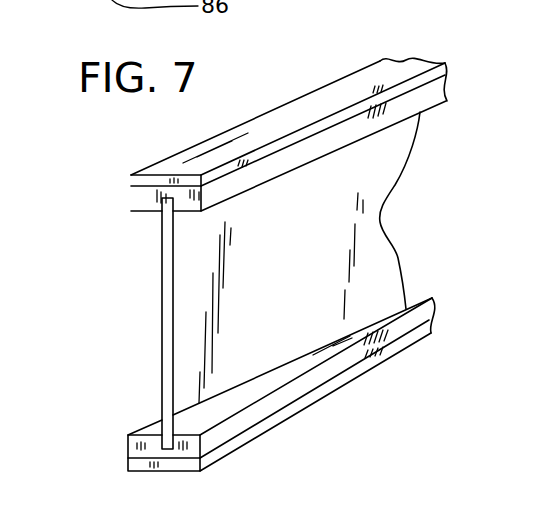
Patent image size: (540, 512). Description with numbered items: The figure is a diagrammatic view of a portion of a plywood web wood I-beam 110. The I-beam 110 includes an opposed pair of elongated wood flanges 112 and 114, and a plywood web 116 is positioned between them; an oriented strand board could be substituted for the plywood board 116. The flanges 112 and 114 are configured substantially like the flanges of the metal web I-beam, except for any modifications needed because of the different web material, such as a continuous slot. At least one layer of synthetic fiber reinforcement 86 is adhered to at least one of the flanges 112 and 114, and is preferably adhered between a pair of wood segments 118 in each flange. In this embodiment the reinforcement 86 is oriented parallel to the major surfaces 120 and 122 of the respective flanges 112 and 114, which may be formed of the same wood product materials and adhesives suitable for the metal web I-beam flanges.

The synthetic fiber reinforcement 86 is at (295, 146).
The plywood web wood I-beam 110 is at (393, 217).
The elongated wood flange 112 is at (422, 341).
The elongated wood flange 114 is at (411, 56).
The plywood web 116 is at (313, 302).
The wood segments 118 is at (130, 181).
The major surface 120 is at (163, 471).
The major surface 122 is at (281, 120).